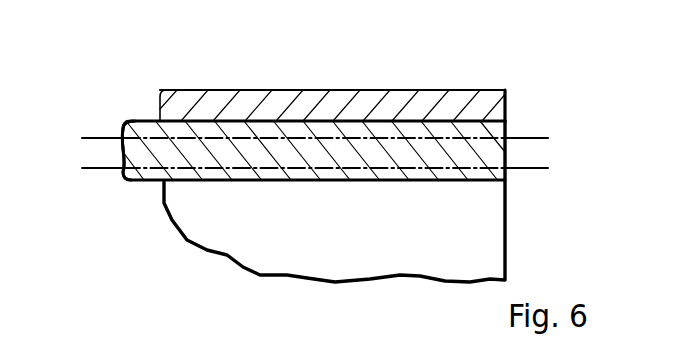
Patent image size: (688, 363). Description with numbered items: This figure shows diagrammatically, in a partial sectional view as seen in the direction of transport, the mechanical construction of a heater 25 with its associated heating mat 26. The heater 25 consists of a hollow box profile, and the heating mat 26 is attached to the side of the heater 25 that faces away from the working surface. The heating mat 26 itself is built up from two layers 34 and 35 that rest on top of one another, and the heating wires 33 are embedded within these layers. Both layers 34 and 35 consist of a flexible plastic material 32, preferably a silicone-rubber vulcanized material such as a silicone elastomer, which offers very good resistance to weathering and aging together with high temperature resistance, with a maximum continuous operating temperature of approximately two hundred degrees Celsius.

The heater 25 is at (292, 84).
The heating mat 26 is at (288, 196).
The flexible plastic material 32 is at (191, 103).
The heating wires 33 is at (543, 168).
The layer 34 is at (135, 121).
The layer 35 is at (142, 182).